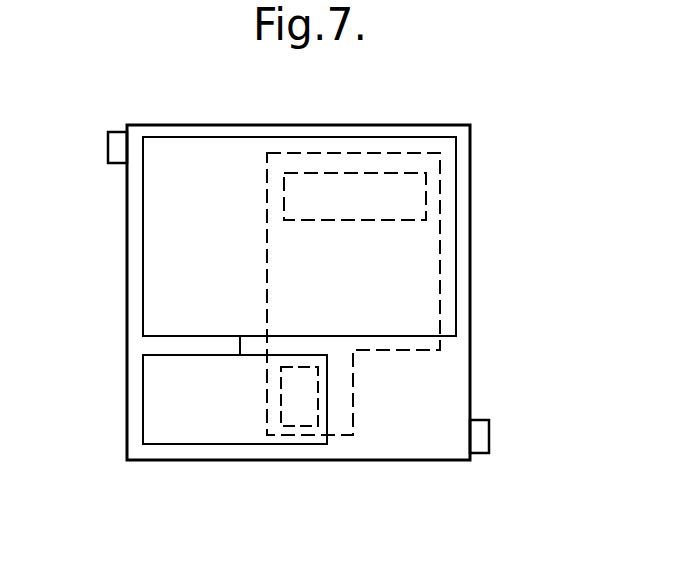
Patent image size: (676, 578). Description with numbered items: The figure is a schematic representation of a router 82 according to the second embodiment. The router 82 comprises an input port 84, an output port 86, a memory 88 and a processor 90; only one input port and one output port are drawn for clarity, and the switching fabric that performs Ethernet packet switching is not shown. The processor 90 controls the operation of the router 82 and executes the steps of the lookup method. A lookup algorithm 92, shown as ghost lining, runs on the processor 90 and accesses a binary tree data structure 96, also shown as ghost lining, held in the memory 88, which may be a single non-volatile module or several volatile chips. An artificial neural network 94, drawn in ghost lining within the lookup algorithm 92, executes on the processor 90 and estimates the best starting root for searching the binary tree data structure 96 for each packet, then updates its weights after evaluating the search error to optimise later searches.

The router 82 is at (512, 121).
The input port 84 is at (108, 150).
The output port 86 is at (489, 440).
The memory 88 is at (173, 444).
The processor 90 is at (226, 157).
The lookup algorithm 92 is at (440, 271).
The artificial neural network 94 is at (426, 191).
The binary tree data structure 96 is at (297, 426).